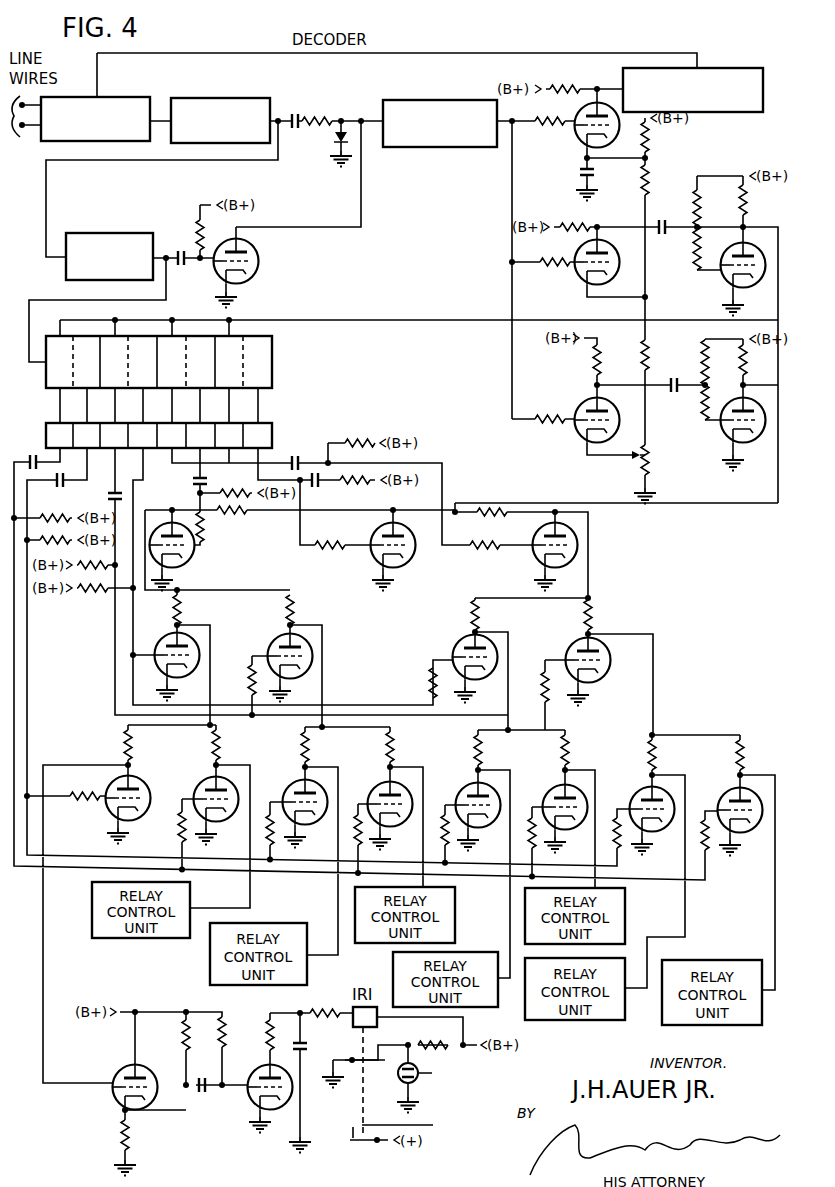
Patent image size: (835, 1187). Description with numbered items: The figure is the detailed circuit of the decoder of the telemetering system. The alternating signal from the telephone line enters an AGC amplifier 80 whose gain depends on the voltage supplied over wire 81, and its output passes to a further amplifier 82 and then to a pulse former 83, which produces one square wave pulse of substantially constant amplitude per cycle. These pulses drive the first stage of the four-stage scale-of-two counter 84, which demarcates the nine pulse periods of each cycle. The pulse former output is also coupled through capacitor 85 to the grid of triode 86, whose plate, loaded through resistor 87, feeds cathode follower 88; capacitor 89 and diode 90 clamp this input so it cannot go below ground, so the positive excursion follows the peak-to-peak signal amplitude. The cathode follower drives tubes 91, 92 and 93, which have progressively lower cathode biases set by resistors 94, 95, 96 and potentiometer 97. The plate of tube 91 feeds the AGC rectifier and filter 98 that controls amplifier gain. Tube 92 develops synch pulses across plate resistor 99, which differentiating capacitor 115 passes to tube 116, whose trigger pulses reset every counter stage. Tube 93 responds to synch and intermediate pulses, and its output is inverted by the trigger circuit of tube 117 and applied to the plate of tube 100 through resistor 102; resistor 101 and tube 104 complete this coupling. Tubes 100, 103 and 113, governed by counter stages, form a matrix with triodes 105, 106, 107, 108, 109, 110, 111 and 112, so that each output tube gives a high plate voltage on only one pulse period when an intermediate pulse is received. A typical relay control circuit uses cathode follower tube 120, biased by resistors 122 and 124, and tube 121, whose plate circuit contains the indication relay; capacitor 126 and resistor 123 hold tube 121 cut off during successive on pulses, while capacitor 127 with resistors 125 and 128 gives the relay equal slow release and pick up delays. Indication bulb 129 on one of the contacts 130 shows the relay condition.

The AGC amplifier 80 is at (128, 97).
The wire 81 is at (97, 70).
The amplifier 82 is at (205, 98).
The pulse former 83 is at (120, 229).
The scale-of-two counter 84 is at (272, 370).
The capacitor 85 is at (181, 268).
The triode 86 is at (258, 261).
The plate resistor 87 is at (195, 232).
The cathode follower 88 is at (418, 93).
The capacitor 89 is at (295, 114).
The diode 90 is at (334, 152).
The tube 91 is at (576, 140).
The tube 92 is at (578, 284).
The tube 93 is at (578, 440).
The resistor 94 is at (648, 140).
The resistor 95 is at (648, 190).
The resistor 96 is at (648, 340).
The potentiometer 97 is at (648, 450).
The AGC rectifier and filter 98 is at (742, 68).
The plate resistor 99 is at (563, 226).
The tube 100 is at (416, 556).
The resistor 101 is at (238, 516).
The resistor 102 is at (492, 517).
The tube 103 is at (195, 552).
The vacuum tube 104 is at (535, 566).
The triode 105 is at (110, 791).
The triode 106 is at (205, 791).
The triode 107 is at (292, 795).
The triode 108 is at (378, 797).
The triode 109 is at (466, 799).
The triode 110 is at (553, 800).
The triode 111 is at (640, 803).
The triode 112 is at (727, 804).
The tube 113 is at (185, 678).
The differentiating capacitor 115 is at (663, 236).
The tube 116 is at (723, 286).
The tube 117 is at (723, 438).
The tube 120 is at (112, 1070).
The tube 121 is at (250, 1105).
The resistor 122 is at (183, 1040).
The resistor 123 is at (225, 1030).
The resistor 124 is at (120, 1135).
The resistor 125 is at (267, 1045).
The capacitor 126 is at (205, 1095).
The capacitor 127 is at (306, 1050).
The resistor 128 is at (323, 1002).
The indication bulb 129 is at (425, 1073).
The contacts 130 is at (367, 1065).